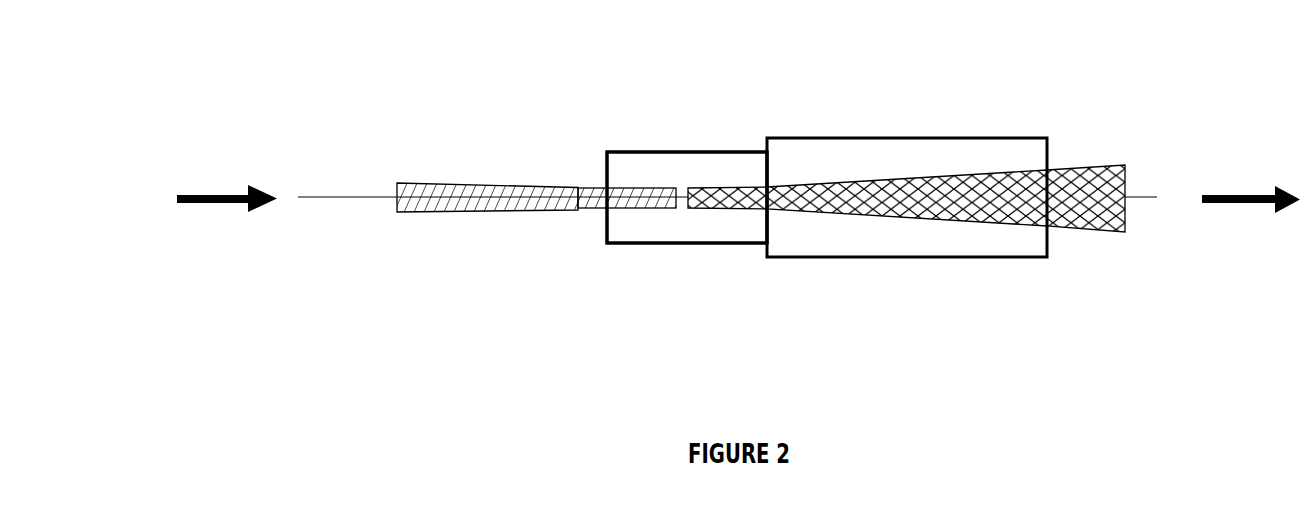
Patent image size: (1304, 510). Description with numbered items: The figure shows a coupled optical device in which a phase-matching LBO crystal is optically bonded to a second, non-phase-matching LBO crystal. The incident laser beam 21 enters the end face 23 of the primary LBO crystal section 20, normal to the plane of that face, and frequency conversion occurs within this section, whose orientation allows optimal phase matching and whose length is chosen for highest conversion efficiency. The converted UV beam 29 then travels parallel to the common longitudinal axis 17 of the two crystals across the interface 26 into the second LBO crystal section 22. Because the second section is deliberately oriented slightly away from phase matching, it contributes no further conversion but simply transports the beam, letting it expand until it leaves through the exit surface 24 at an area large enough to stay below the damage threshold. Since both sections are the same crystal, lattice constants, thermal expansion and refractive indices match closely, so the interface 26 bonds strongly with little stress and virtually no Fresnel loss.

The longitudinal axis 17 is at (343, 196).
The primary LBO crystal section 20 is at (706, 152).
The incident laser beam 21 is at (453, 183).
The second LBO crystal section 22 is at (962, 138).
The end face 23 is at (607, 226).
The exit surface 24 is at (1065, 168).
The interface 26 is at (762, 221).
The UV beam 29 is at (820, 212).